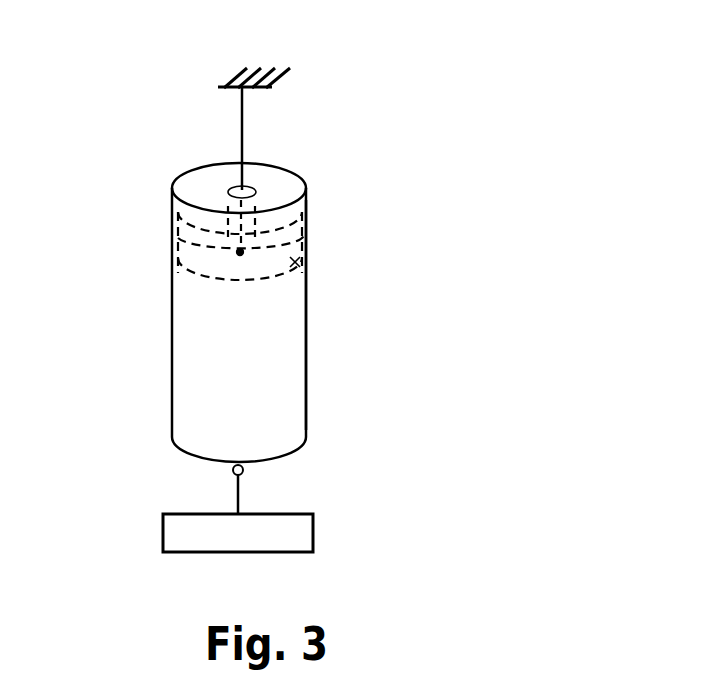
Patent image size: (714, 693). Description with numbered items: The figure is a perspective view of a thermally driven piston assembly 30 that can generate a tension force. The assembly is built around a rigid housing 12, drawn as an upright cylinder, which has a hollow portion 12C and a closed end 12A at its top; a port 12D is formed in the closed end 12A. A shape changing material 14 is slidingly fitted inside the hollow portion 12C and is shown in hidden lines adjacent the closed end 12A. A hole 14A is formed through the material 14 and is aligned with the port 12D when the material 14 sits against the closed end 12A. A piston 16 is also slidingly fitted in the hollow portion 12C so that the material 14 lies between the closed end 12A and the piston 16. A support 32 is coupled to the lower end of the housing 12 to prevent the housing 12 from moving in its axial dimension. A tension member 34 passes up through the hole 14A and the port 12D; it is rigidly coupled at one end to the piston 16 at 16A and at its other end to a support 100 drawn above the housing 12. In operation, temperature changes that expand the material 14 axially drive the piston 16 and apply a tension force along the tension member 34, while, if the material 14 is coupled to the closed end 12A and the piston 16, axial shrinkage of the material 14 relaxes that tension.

The support 100 is at (200, 52).
The tension member 34 is at (162, 138).
The rigid housing 12 is at (309, 325).
The closed end 12A is at (300, 171).
The hollow portion 12C is at (378, 301).
The port 12D is at (324, 140).
The shape changing material 14 is at (187, 246).
The hole 14A is at (179, 275).
The piston 16 is at (336, 273).
The coupling point on piston 16A is at (350, 285).
The support 32 is at (295, 508).
The thermally driven piston assembly 30 is at (524, 75).